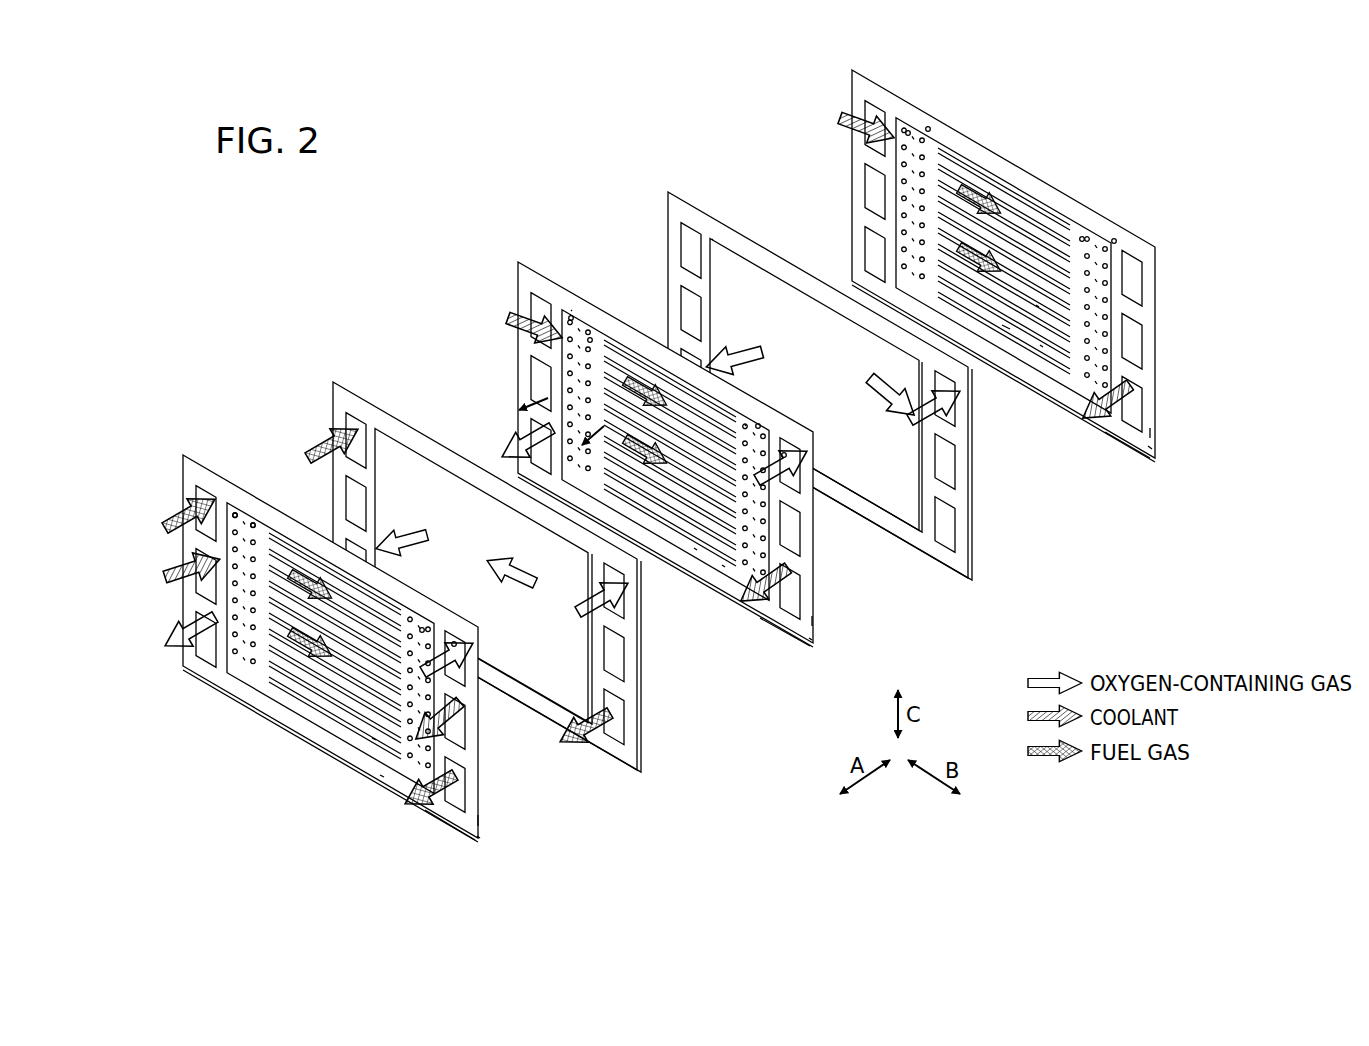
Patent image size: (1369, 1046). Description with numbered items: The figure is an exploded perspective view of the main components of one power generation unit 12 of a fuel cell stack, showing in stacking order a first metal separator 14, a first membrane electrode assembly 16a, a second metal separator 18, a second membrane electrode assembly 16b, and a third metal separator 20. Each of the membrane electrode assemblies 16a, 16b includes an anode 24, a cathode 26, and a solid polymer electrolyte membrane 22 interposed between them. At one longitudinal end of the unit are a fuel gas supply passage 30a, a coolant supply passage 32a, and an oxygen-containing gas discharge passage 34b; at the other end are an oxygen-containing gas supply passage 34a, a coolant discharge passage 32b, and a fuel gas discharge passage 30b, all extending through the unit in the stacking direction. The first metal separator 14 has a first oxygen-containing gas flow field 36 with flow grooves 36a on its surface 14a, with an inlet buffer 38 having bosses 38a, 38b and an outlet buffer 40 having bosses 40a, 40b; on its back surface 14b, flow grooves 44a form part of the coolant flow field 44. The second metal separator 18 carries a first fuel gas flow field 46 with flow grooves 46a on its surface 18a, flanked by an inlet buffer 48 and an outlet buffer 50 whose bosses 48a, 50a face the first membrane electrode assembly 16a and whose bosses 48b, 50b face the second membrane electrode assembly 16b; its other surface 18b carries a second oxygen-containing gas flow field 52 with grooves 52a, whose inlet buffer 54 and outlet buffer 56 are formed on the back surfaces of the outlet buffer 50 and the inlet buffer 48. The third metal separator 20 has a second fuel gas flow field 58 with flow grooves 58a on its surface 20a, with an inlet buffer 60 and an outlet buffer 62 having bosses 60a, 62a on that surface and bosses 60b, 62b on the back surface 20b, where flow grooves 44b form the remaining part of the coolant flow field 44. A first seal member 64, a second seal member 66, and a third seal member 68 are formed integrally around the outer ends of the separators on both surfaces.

The power generation unit 12 is at (326, 270).
The first metal separator 14 is at (183, 455).
The surface 14a is at (482, 818).
The surface 14b is at (480, 838).
The first membrane electrode assembly 16a is at (333, 382).
The second membrane electrode assembly 16b is at (668, 192).
The second metal separator 18 is at (518, 262).
The surface 18a is at (812, 640).
The surface 18b is at (816, 618).
The third metal separator 20 is at (852, 70).
The surface 20a is at (1152, 449).
The surface 20b is at (1152, 428).
The solid polymer electrolyte membrane 22 is at (758, 268).
The anode 24 is at (784, 300).
The cathode 26 is at (730, 262).
The fuel gas supply passage 30a is at (196, 500).
The fuel gas discharge passage 30b is at (470, 786).
The coolant supply passage 32a is at (196, 560).
The coolant discharge passage 32b is at (470, 738).
The oxygen-containing gas supply passage 34a is at (468, 652).
The oxygen-containing gas discharge passage 34b is at (196, 624).
The first oxygen-containing gas flow field 36 is at (353, 673).
The flow grooves 36a is at (383, 780).
The inlet buffer 38 is at (502, 587).
The bosses 38a is at (456, 640).
The bosses 38b is at (424, 626).
The outlet buffer 40 is at (308, 471).
The bosses 40a is at (256, 520).
The bosses 40b is at (236, 510).
The coolant flow field 44 is at (1005, 330).
The flow grooves 44a is at (374, 740).
The flow grooves 44b is at (1048, 365).
The first fuel gas flow field 46 is at (690, 483).
The flow grooves 46a is at (724, 567).
The inlet buffer 48 is at (642, 279).
The bosses 48a is at (592, 337).
The bosses 48b is at (572, 312).
The outlet buffer 50 is at (836, 400).
The bosses 50a is at (786, 452).
The bosses 50b is at (760, 420).
The second oxygen-containing gas flow field 52 is at (560, 577).
The grooves 52a is at (696, 552).
The inlet buffer 54 is at (745, 425).
The outlet buffer 56 is at (571, 310).
The second fuel gas flow field 58 is at (962, 250).
The flow grooves 58a is at (1042, 335).
The inlet buffer 60 is at (978, 86).
The bosses 60a is at (908, 130).
The bosses 60b is at (930, 125).
The outlet buffer 62 is at (1166, 204).
The bosses 62a is at (1084, 236).
The bosses 62b is at (1116, 238).
The first seal member 64 is at (448, 822).
The second seal member 66 is at (782, 630).
The third seal member 68 is at (1116, 444).